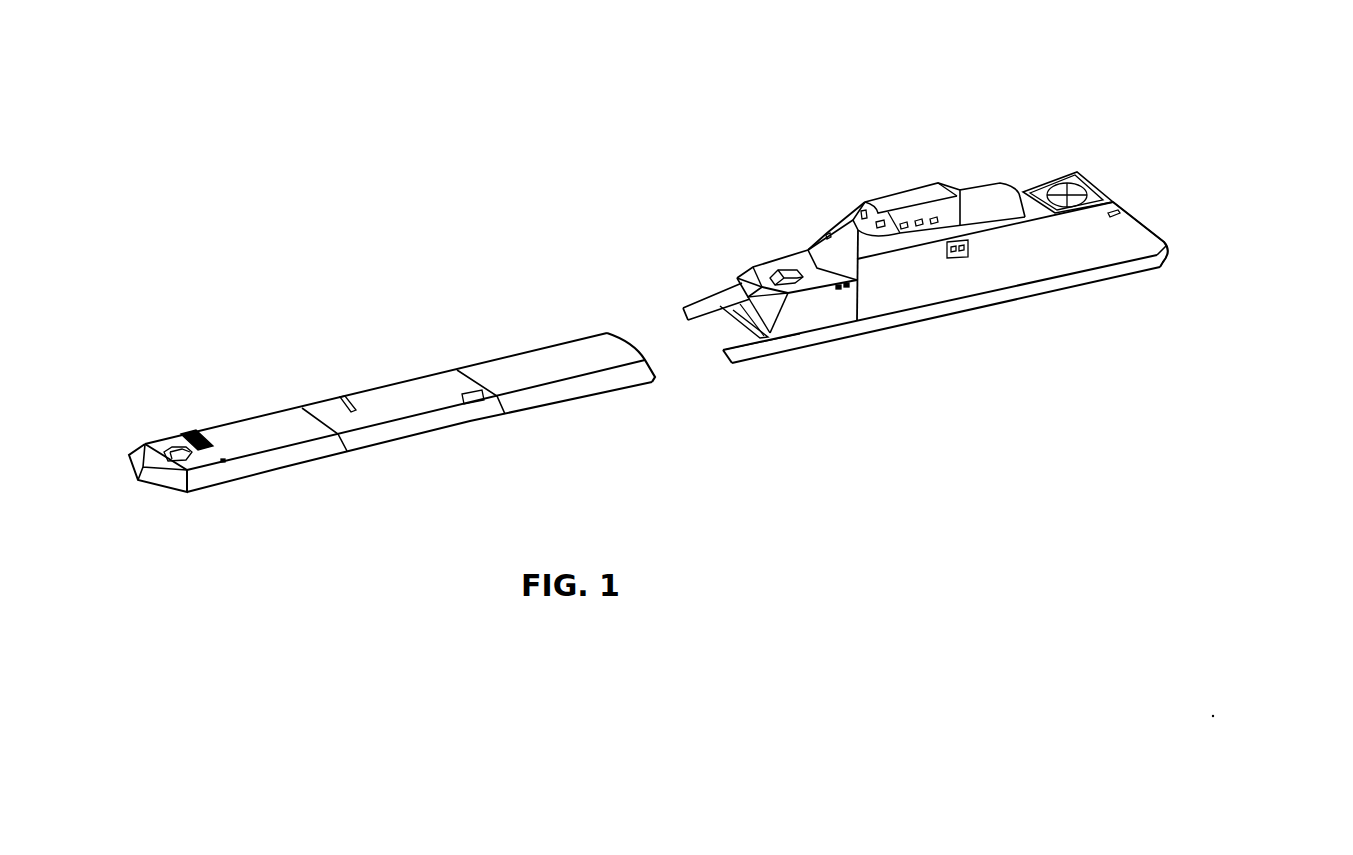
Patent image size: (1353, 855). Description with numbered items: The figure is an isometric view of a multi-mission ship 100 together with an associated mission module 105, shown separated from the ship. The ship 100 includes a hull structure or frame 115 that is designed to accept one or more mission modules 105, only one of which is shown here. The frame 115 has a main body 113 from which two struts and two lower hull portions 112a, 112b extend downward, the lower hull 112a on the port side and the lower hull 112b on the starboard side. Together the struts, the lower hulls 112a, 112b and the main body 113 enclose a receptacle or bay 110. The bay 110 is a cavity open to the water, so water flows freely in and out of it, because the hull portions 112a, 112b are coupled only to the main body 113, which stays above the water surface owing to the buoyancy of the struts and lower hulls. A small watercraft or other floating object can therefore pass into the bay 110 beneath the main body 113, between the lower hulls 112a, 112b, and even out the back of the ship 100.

The multi-mission ship 100 is at (784, 207).
The mission module 105 is at (320, 383).
The bay 110 is at (710, 330).
The lower hull portion 112a is at (763, 358).
The lower hull portion 112b is at (683, 313).
The main body 113 is at (1022, 200).
The hull structure or frame 115 is at (1178, 276).